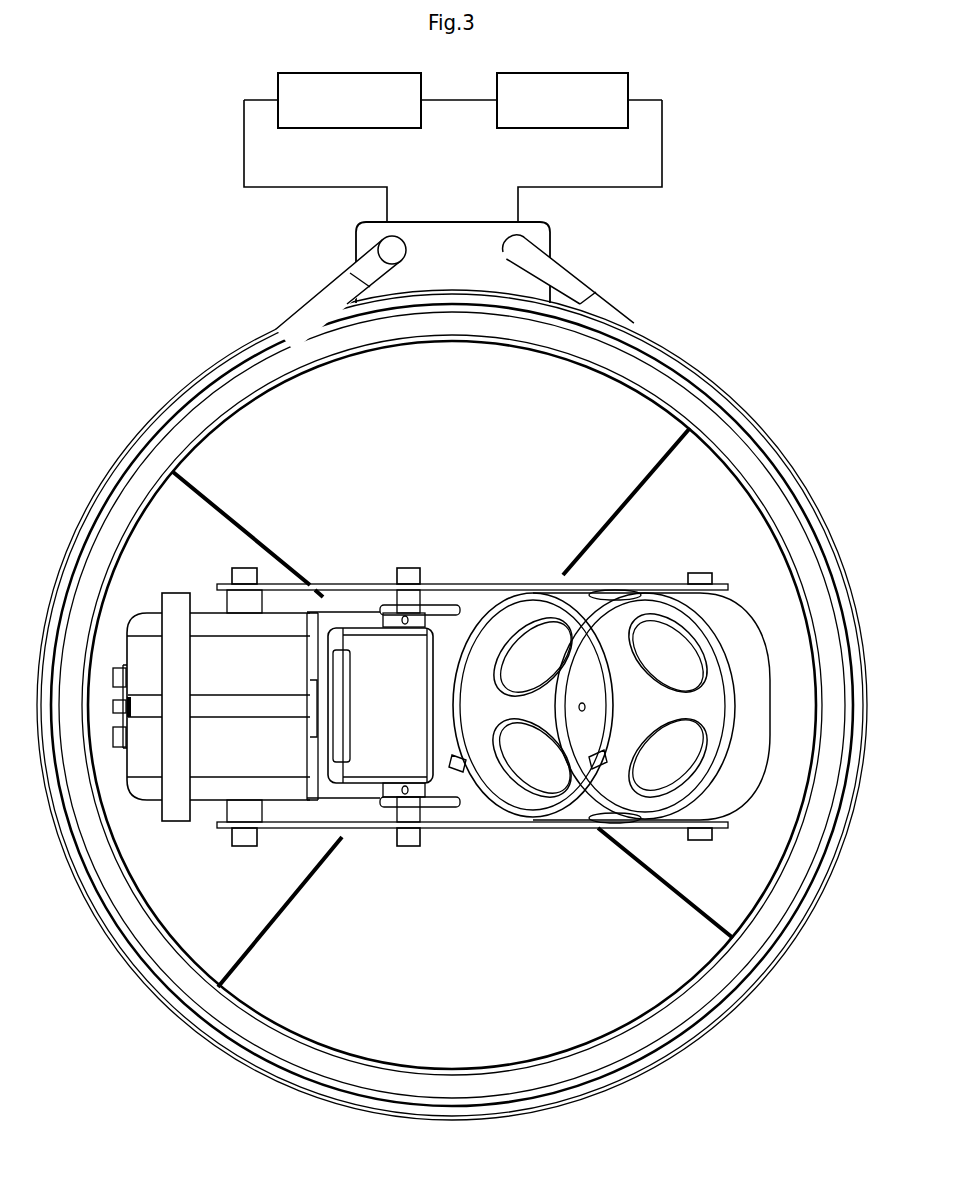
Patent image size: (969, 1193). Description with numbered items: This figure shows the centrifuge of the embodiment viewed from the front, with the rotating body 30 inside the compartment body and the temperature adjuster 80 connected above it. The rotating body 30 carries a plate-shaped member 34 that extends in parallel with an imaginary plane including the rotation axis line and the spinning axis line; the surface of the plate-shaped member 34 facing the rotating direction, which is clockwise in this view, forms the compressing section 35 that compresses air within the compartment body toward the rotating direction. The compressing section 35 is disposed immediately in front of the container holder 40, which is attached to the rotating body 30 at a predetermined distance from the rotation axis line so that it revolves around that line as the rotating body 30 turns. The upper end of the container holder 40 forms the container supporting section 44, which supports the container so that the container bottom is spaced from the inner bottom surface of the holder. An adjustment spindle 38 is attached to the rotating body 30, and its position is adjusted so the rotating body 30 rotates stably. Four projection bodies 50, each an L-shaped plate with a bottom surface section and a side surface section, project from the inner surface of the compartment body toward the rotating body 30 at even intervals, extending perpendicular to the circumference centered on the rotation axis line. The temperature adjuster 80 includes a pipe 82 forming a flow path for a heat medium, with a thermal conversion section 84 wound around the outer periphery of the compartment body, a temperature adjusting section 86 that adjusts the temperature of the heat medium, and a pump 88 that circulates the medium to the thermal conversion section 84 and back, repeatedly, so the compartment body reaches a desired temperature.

The rotating body 30 is at (457, 525).
The plate-shaped member 34 is at (508, 584).
The compressing section 35 is at (285, 584).
The adjustment spindle 38 is at (177, 596).
The container holder 40 is at (608, 598).
The container supporting section 44 is at (518, 818).
The projection body 50 is at (186, 486).
The temperature adjuster 80 is at (452, 585).
The pipe 82 is at (316, 300).
The thermal conversion section 84 is at (568, 279).
The temperature adjusting section 86 is at (373, 76).
The pump 88 is at (593, 76).